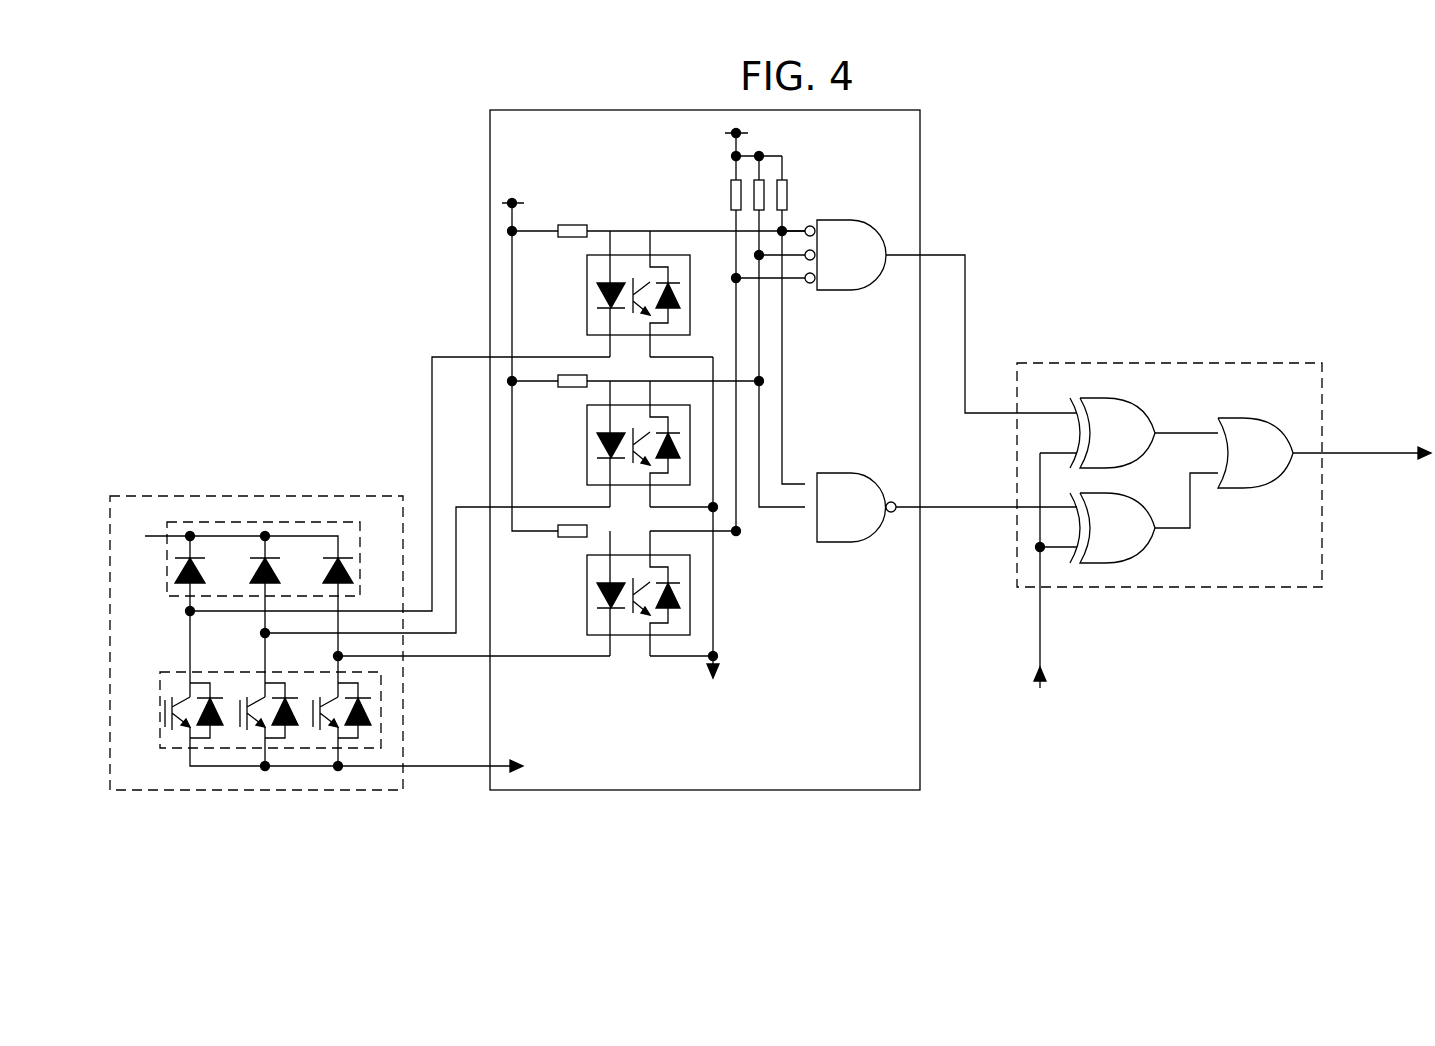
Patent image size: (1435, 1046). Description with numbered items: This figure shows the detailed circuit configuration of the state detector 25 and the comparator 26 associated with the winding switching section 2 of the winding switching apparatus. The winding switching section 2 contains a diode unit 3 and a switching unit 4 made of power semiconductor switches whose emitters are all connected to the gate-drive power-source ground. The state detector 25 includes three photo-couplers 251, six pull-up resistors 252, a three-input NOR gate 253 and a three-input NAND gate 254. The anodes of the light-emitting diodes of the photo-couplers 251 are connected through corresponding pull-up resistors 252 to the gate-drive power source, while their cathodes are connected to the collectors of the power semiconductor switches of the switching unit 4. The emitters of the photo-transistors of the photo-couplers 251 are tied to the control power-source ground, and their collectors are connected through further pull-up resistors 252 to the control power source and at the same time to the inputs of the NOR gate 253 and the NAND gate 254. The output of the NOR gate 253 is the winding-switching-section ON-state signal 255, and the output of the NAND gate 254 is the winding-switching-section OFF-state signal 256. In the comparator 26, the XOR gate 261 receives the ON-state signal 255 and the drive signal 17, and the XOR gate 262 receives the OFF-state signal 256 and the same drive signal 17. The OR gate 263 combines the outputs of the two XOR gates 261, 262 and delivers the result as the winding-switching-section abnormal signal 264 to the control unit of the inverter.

The winding switching section 2 is at (334, 625).
The diode unit 3 is at (362, 562).
The switching unit 4 is at (178, 676).
The drive signal 17 is at (1039, 610).
The state detector 25 is at (783, 450).
The comparator 26 is at (1169, 457).
The photo-couplers 251 is at (588, 296).
The pull-up resistors 252 is at (570, 239).
The NOR gate 253 is at (832, 236).
The NAND gate 254 is at (838, 485).
The winding-switching-section ON-state signal 255 is at (945, 260).
The winding-switching-section OFF-state signal 256 is at (937, 507).
The XOR gate 261 is at (1103, 406).
The XOR gate 262 is at (1130, 542).
The OR gate 263 is at (1236, 428).
The winding-switching-section abnormal signal 264 is at (1337, 445).